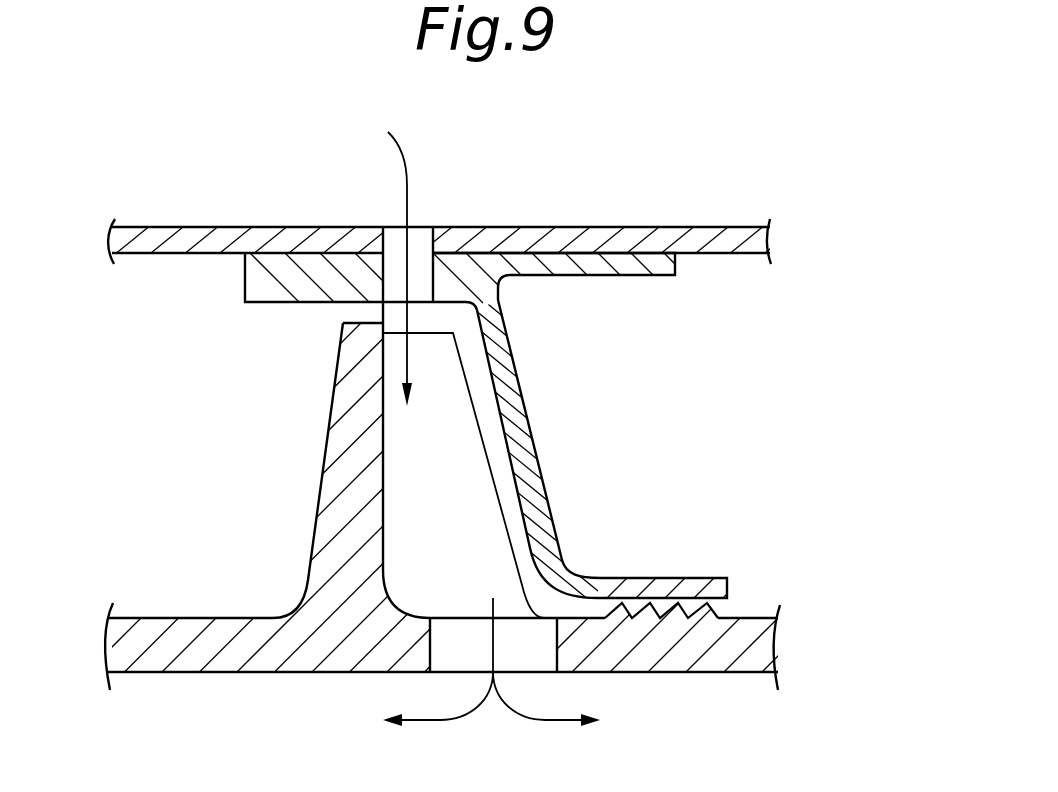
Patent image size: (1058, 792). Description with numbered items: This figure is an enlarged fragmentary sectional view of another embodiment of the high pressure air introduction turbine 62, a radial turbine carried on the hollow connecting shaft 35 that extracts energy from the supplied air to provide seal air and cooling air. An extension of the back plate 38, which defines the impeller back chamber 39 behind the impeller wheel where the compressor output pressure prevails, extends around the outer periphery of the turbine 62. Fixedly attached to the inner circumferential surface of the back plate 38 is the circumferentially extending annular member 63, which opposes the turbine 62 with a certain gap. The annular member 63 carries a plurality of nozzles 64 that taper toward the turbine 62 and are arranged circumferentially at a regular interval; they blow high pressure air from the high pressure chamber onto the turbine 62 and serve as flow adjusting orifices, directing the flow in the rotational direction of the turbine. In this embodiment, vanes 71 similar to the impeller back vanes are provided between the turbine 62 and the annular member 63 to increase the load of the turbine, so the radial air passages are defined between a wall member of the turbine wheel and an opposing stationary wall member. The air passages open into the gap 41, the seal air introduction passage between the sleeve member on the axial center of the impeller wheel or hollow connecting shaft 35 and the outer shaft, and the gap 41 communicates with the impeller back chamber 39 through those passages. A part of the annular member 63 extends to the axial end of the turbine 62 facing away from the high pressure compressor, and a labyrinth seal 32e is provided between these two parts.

The back plate 38 is at (181, 227).
The circumferentially extending annular member 63 is at (575, 276).
The nozzles 64 is at (432, 251).
The vanes 71 is at (489, 501).
The high pressure air introduction turbine 62 is at (337, 400).
The impeller back chamber 39 is at (237, 541).
The hollow connecting shaft 35 is at (668, 668).
The labyrinth seal 32e is at (733, 610).
The gap 41 is at (270, 746).